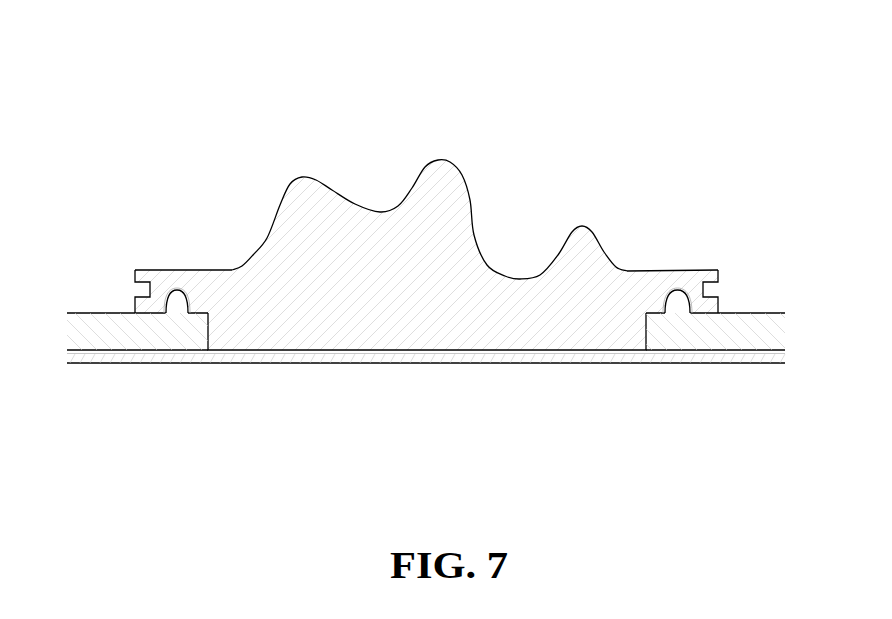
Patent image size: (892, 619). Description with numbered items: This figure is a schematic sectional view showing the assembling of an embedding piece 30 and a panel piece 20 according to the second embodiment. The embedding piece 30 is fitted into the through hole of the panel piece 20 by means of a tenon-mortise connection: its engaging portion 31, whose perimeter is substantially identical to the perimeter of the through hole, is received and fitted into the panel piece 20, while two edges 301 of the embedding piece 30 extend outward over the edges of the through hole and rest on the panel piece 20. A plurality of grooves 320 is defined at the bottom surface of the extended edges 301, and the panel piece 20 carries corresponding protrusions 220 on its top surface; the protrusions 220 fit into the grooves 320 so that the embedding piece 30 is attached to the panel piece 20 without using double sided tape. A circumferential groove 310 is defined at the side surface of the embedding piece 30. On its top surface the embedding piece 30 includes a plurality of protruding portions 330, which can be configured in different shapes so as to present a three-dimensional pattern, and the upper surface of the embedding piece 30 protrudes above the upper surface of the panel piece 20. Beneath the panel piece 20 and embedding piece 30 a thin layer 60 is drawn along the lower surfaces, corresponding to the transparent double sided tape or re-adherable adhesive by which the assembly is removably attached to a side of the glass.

The panel piece 20 is at (105, 336).
The embedding piece 30 is at (688, 290).
The engaging portion 31 is at (220, 330).
The adhesive layer 60 is at (122, 353).
The protrusion 220 is at (178, 303).
The edge 301 is at (184, 276).
The circumferential groove 310 is at (148, 292).
The groove 320 is at (173, 292).
The protruding portion 330 is at (430, 198).